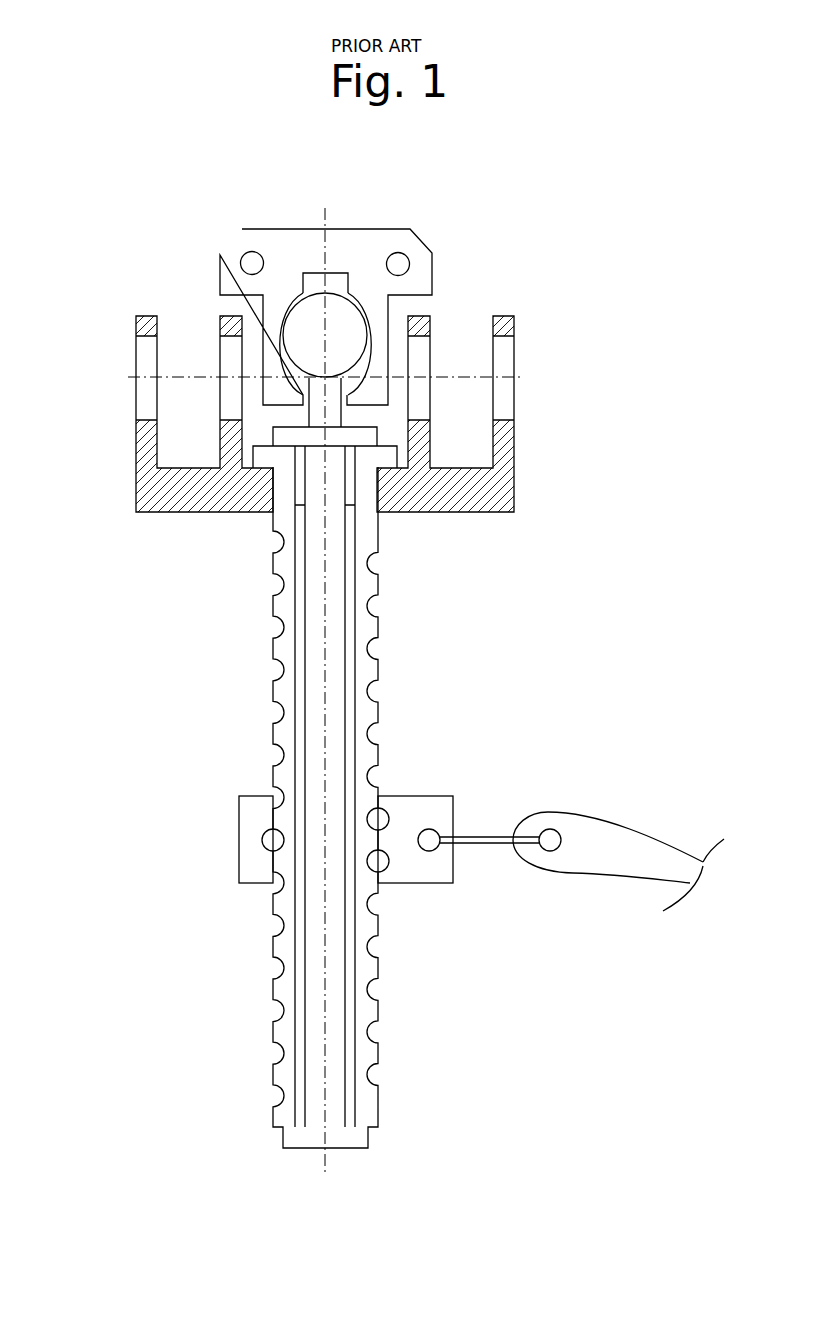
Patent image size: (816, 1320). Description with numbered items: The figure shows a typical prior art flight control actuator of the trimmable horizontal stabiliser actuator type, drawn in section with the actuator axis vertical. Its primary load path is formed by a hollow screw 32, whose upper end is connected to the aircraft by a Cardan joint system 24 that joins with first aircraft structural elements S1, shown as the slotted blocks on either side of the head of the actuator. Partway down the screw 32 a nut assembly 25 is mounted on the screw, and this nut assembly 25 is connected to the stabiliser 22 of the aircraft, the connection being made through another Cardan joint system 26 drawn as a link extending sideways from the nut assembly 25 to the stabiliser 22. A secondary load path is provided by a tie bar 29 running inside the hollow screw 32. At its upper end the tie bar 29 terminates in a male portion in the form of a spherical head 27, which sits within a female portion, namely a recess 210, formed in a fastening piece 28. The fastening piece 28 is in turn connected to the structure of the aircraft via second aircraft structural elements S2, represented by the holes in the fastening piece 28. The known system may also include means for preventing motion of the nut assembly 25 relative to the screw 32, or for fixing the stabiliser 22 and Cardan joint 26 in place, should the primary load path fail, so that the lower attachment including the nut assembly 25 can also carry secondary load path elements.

The stabiliser 22 is at (557, 812).
The Cardan joint system 24 is at (137, 453).
The nut assembly 25 is at (422, 796).
The Cardan joint system 26 is at (495, 836).
The spherical head 27 is at (297, 335).
The fastening piece 28 is at (392, 229).
The tie bar 29 is at (312, 680).
The hollow screw 32 is at (372, 687).
The recess 210 is at (300, 293).
The first aircraft structural elements S1 is at (183, 374).
The second aircraft structural elements S2 is at (409, 257).